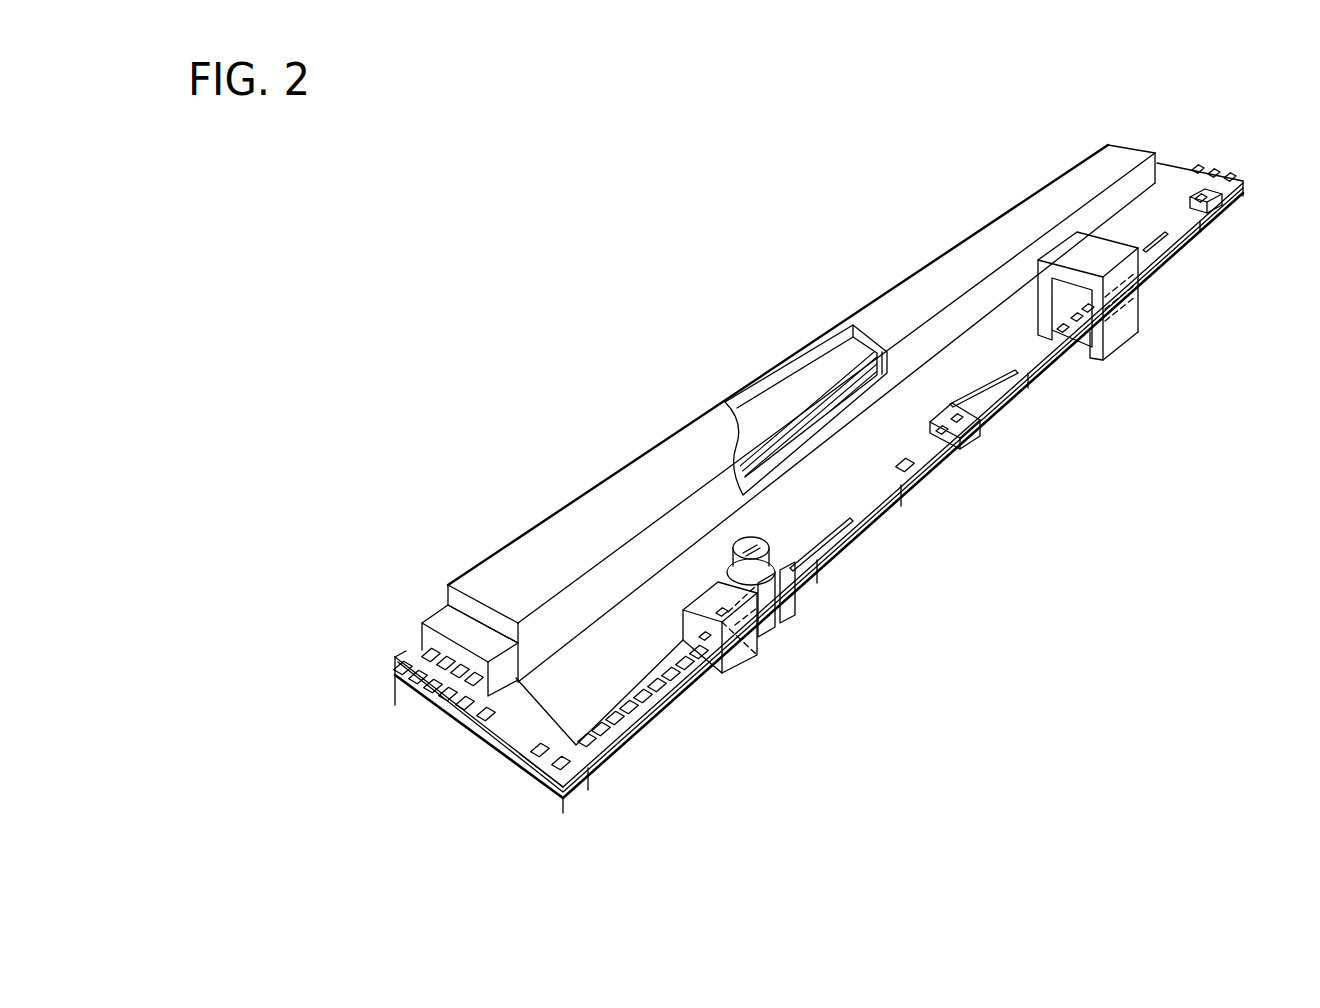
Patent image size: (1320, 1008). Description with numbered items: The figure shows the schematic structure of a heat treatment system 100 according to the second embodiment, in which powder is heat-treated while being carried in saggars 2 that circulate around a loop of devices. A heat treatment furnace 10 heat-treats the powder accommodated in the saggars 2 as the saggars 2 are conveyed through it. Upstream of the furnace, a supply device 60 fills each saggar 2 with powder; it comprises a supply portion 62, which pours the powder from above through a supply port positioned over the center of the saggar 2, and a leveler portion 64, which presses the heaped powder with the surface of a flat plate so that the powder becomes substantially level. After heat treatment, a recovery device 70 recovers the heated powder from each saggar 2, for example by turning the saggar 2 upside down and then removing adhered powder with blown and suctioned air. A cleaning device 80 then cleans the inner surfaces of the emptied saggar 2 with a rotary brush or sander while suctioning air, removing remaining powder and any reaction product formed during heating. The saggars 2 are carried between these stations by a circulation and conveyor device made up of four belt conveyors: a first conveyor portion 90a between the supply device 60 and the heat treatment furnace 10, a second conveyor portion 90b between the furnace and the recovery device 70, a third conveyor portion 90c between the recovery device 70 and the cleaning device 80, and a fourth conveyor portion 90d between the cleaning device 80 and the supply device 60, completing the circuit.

The heat treatment system 100 is at (381, 171).
The heat treatment furnace 10 is at (626, 330).
The saggar 2 is at (934, 476).
The supply device 60 is at (764, 655).
The supply portion 62 is at (790, 624).
The leveler portion 64 is at (754, 664).
The recovery device 70 is at (1150, 322).
The cleaning device 80 is at (992, 435).
The first conveyor portion 90a is at (537, 770).
The second conveyor portion 90b is at (1178, 245).
The third conveyor portion 90c is at (1048, 370).
The fourth conveyor portion 90d is at (875, 517).